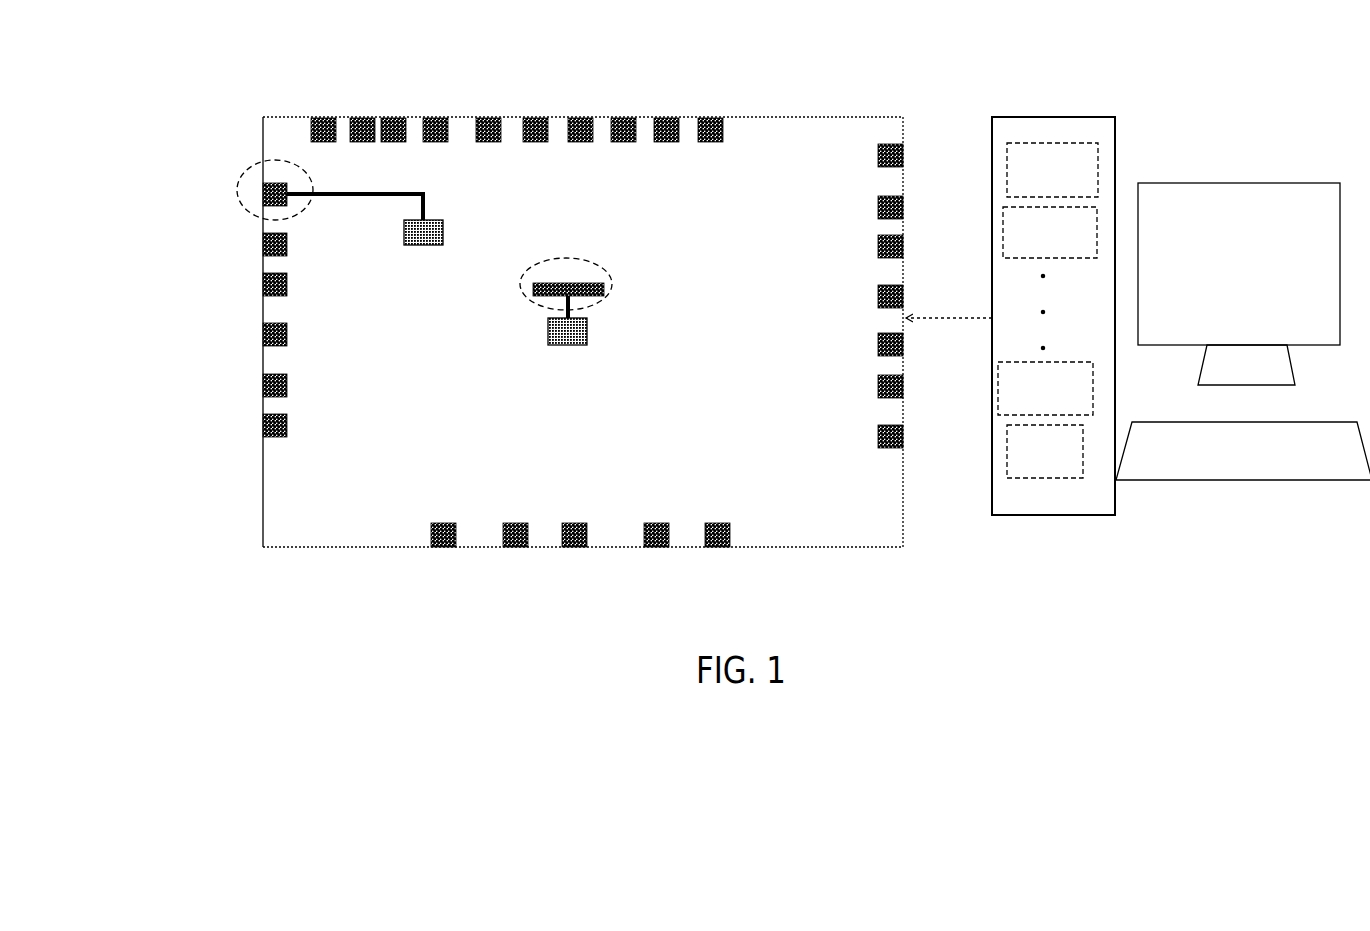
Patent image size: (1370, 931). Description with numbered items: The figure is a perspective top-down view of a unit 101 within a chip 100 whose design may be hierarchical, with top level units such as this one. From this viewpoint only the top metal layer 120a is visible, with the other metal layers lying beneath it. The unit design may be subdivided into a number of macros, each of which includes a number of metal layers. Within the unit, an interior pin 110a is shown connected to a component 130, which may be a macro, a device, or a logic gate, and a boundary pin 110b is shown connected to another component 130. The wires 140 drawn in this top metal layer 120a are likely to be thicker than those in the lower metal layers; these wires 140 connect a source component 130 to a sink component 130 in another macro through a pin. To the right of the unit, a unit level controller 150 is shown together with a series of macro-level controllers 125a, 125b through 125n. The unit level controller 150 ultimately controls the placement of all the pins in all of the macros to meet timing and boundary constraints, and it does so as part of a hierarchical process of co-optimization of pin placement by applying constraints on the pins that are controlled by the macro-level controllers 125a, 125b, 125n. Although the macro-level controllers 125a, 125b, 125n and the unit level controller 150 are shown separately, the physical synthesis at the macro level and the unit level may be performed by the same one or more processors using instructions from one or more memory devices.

The chip 100 is at (140, 82).
The unit 101 is at (867, 527).
The interior pin 110a is at (514, 291).
The boundary pin 110b is at (252, 248).
The top metal layer 120a is at (287, 497).
The component 130 is at (535, 343).
The wires 140 is at (434, 203).
The macro-level controller 125a is at (1052, 170).
The macro-level controller 125b is at (1050, 232).
The macro-level controller 125n is at (1045, 388).
The unit level controller 150 is at (1045, 451).